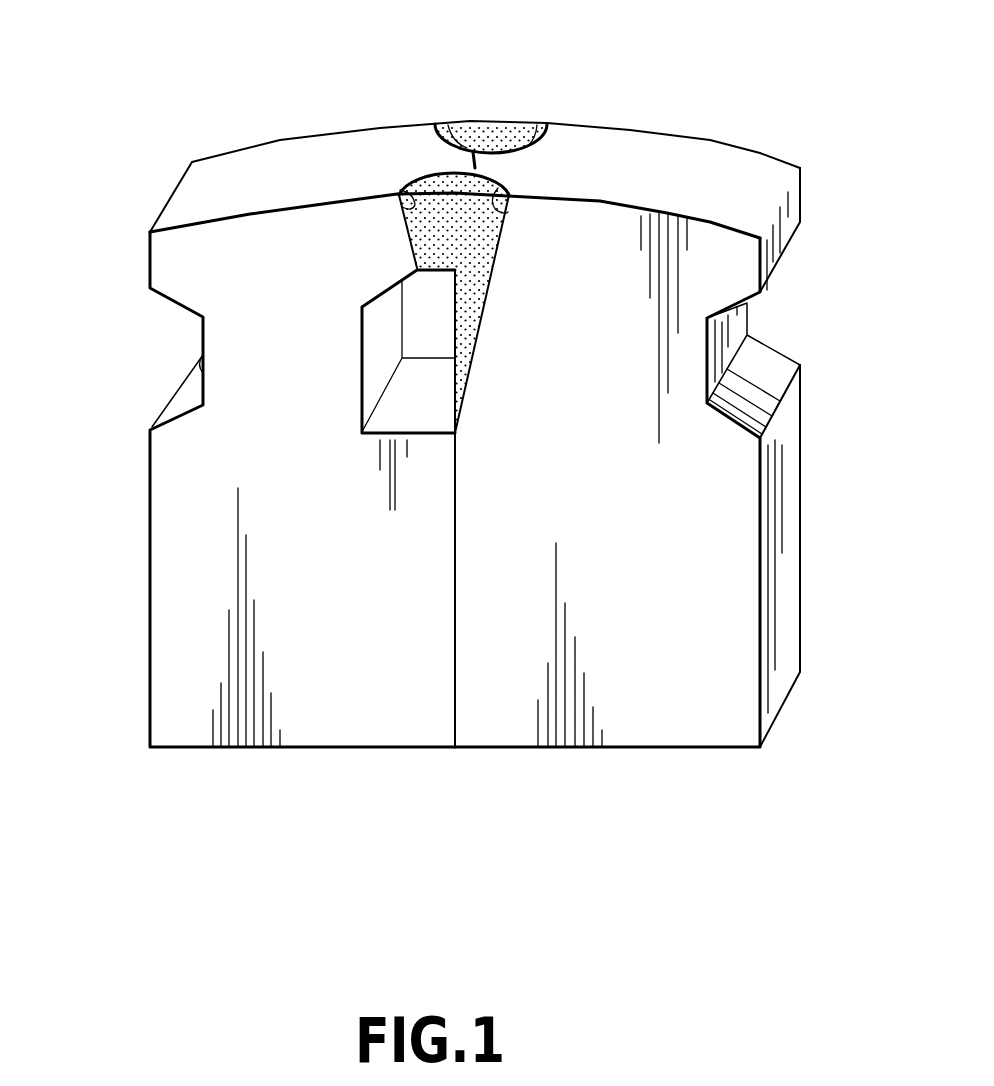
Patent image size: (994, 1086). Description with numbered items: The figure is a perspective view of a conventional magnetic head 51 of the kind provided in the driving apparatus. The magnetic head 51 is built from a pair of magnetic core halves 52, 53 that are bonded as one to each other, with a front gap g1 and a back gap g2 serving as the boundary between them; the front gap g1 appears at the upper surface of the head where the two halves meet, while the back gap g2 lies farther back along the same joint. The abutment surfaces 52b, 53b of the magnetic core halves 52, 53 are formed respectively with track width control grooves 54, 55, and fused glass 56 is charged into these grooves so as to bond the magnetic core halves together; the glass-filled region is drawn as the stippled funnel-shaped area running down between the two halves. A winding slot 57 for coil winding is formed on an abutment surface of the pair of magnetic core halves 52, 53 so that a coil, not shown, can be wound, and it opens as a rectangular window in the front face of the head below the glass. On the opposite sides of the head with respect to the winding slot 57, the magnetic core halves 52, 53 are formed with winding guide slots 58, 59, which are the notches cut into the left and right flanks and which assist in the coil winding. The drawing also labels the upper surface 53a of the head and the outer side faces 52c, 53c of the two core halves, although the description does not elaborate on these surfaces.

The magnetic head 51 is at (133, 163).
The magnetic core half 52 is at (310, 715).
The magnetic core half 53 is at (618, 722).
The abutment surface 52b is at (583, 127).
The side surface of first core half 52c is at (172, 517).
The top surface of core 53a is at (282, 160).
The abutment surface 53b is at (583, 127).
The side surface of second core half 53c is at (738, 555).
The track width control groove 54 is at (398, 203).
The track width control groove 55 is at (507, 215).
The fused glass 56 is at (470, 280).
The winding slot 57 is at (378, 333).
The winding guide slot 58 is at (200, 372).
The winding guide slot 59 is at (732, 328).
The front gap g1 is at (475, 168).
The back gap g2 is at (455, 413).